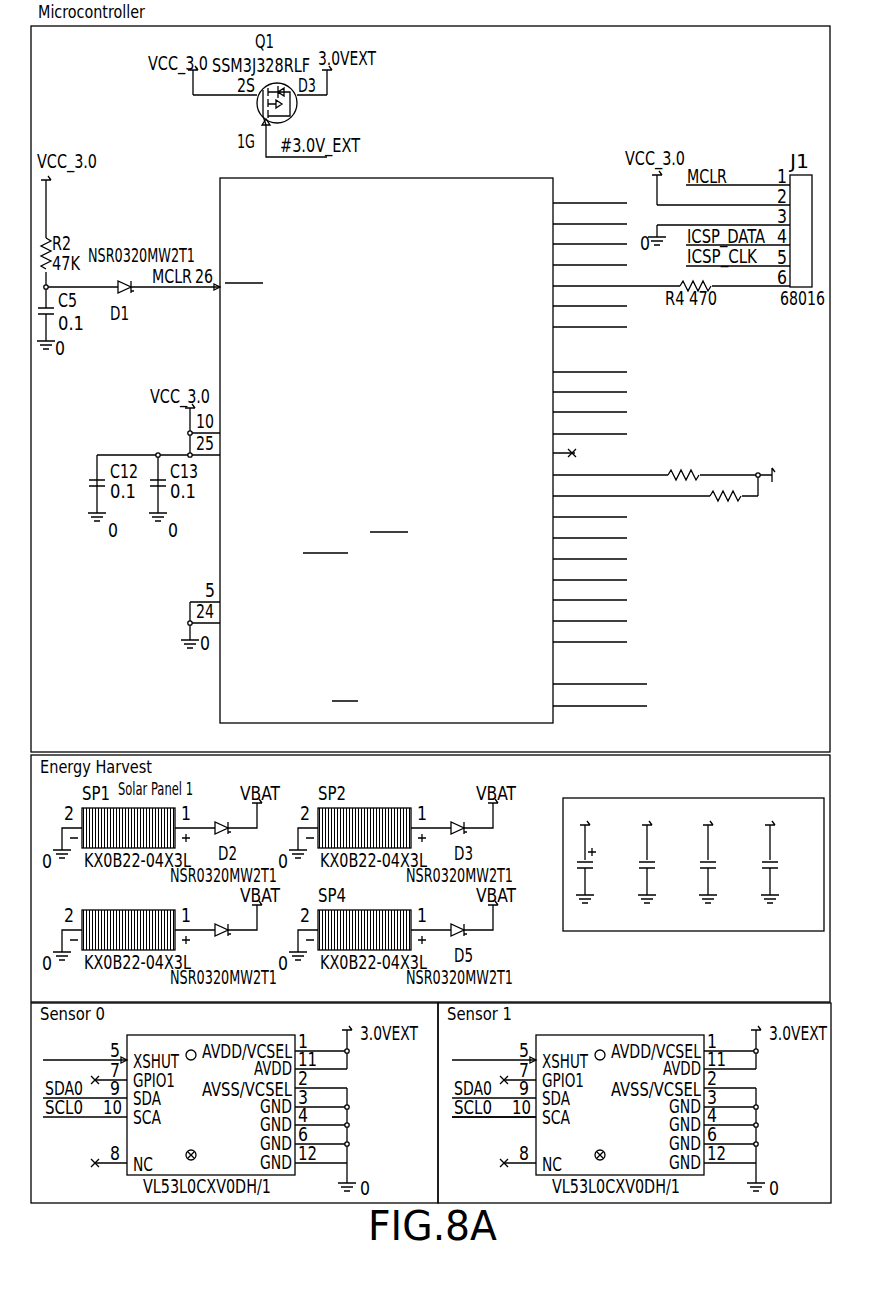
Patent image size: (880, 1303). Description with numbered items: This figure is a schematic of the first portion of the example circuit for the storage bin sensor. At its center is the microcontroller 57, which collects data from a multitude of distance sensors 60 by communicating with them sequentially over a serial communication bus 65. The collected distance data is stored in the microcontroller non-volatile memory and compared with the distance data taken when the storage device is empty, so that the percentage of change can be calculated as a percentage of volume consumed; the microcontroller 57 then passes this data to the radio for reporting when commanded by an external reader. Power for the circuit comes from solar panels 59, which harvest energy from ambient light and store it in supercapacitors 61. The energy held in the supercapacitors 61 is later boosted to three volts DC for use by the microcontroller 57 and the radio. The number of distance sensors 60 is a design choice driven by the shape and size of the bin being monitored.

The microcontroller 57 is at (507, 178).
The solar panels 59 is at (82, 911).
The distance sensors 60 is at (127, 1172).
The supercapacitors 61 is at (712, 931).
The serial communication bus 65 is at (625, 538).